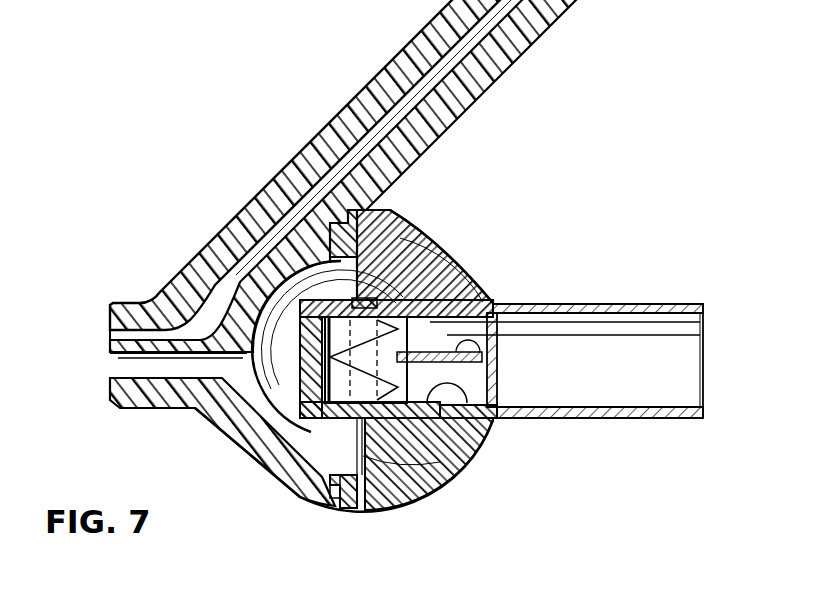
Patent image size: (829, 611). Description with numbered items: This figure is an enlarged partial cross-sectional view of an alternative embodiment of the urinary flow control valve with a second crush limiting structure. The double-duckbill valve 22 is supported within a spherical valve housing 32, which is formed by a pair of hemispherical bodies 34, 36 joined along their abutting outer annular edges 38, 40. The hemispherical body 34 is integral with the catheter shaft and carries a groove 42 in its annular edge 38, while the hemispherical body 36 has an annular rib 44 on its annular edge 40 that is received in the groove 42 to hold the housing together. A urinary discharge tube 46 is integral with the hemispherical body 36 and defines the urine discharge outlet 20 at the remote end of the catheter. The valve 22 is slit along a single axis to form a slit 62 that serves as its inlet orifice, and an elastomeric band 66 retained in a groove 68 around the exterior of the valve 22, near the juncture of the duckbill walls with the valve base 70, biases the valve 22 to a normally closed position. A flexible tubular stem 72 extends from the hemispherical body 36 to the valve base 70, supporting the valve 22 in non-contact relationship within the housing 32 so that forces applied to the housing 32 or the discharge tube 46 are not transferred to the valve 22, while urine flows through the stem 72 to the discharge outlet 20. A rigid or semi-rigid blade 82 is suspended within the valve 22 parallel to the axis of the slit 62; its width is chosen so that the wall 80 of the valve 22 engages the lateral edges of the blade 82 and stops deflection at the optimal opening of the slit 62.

The urine discharge outlet 20 is at (703, 350).
The double-duckbill valve 22 is at (438, 278).
The spherical valve housing 32 is at (273, 482).
The hemispherical body 34 is at (243, 448).
The hemispherical body 36 is at (470, 456).
The outer annular edge 38 is at (402, 301).
The outer annular edge 40 is at (362, 213).
The groove 42 is at (344, 475).
The annular rib 44 is at (342, 505).
The urinary discharge tube 46 is at (603, 304).
The slit 62 is at (333, 345).
The elastomeric band 66 is at (378, 440).
The groove 68 is at (423, 470).
The valve base 70 is at (360, 283).
The flexible tubular stem 72 is at (494, 418).
The wall of valve 80 is at (387, 408).
The blade 82 is at (493, 348).